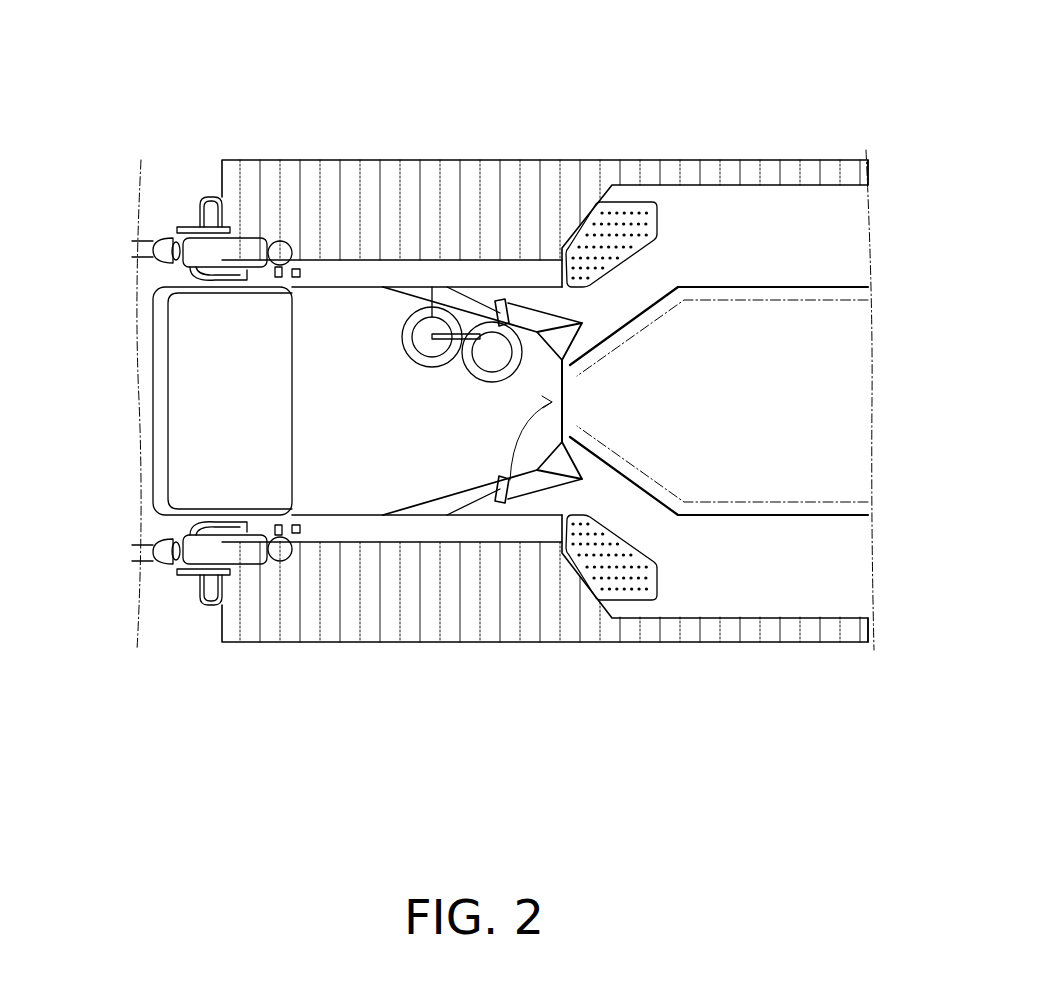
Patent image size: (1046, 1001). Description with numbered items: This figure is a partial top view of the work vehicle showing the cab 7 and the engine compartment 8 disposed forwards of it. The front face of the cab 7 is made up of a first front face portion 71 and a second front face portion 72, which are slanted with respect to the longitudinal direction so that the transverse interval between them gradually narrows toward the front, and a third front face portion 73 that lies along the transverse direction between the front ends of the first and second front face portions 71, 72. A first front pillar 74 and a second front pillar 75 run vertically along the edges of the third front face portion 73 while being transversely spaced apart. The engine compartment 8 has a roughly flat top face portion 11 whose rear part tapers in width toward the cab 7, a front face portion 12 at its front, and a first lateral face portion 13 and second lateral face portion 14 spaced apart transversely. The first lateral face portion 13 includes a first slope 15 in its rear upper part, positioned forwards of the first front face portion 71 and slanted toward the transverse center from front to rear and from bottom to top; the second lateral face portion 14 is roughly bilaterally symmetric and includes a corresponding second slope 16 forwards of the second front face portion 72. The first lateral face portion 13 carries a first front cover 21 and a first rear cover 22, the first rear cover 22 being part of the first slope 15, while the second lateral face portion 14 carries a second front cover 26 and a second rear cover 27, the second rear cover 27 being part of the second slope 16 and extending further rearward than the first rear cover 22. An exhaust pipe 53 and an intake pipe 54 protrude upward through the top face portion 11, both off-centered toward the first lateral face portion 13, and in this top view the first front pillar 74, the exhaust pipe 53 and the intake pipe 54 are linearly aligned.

The cab 7 is at (757, 335).
The first front face portion 71 is at (643, 303).
The second front face portion 72 is at (625, 485).
The engine compartment 8 is at (235, 313).
The front face portion 12 is at (150, 391).
The first lateral face portion 13 is at (362, 278).
The second lateral face portion 14 is at (382, 517).
The top face portion 11 is at (320, 500).
The first front cover 21 is at (337, 267).
The second front cover 26 is at (340, 525).
The first rear cover 22 is at (458, 292).
The second rear cover 27 is at (442, 503).
The exhaust pipe 53 is at (432, 315).
The intake pipe 54 is at (495, 305).
The second slope 16 is at (475, 500).
The first slope 15 is at (563, 340).
The first front pillar 74 is at (567, 366).
The second front pillar 75 is at (547, 497).
The third front face portion 73 is at (510, 480).